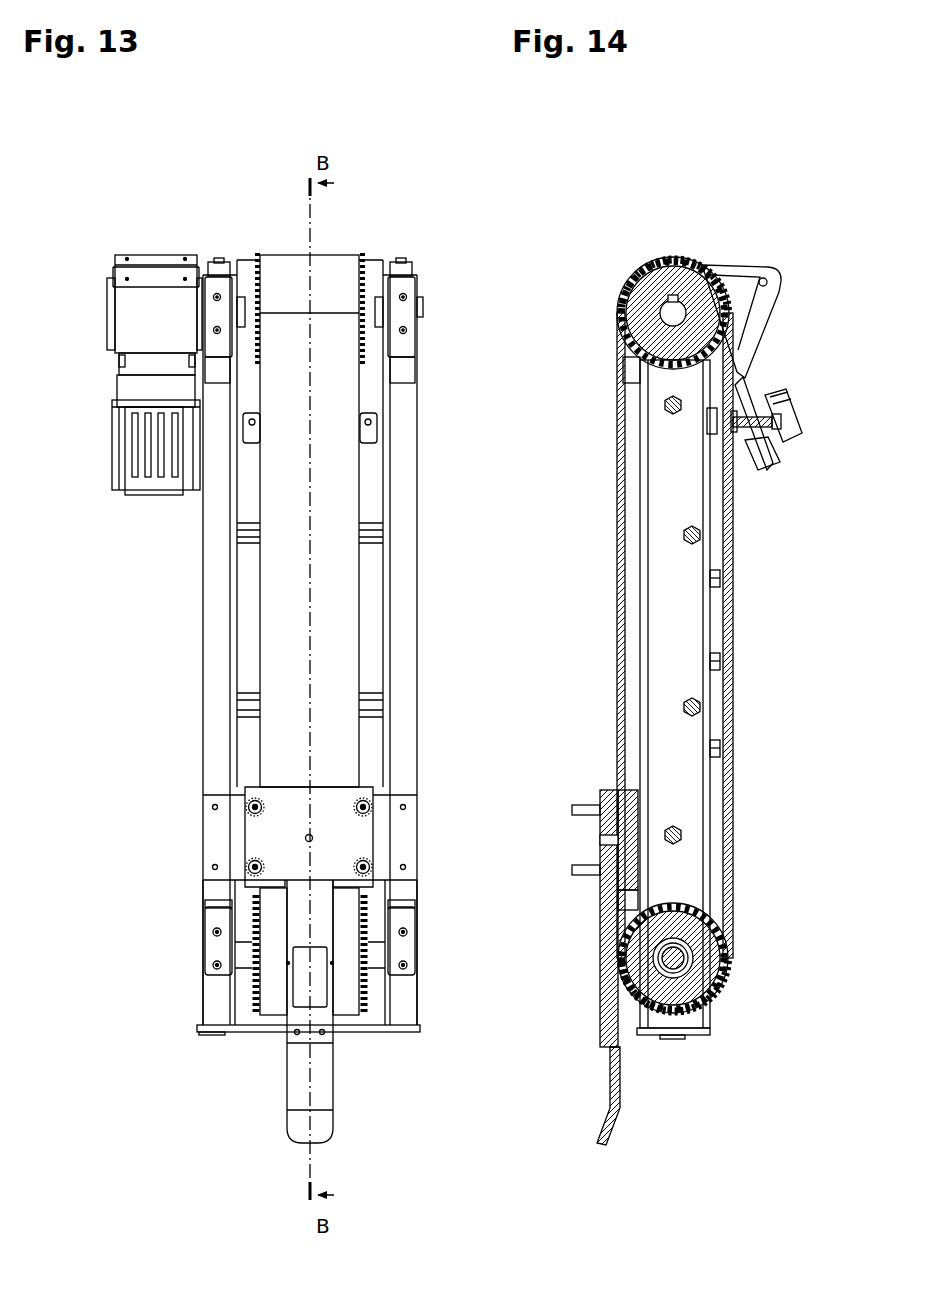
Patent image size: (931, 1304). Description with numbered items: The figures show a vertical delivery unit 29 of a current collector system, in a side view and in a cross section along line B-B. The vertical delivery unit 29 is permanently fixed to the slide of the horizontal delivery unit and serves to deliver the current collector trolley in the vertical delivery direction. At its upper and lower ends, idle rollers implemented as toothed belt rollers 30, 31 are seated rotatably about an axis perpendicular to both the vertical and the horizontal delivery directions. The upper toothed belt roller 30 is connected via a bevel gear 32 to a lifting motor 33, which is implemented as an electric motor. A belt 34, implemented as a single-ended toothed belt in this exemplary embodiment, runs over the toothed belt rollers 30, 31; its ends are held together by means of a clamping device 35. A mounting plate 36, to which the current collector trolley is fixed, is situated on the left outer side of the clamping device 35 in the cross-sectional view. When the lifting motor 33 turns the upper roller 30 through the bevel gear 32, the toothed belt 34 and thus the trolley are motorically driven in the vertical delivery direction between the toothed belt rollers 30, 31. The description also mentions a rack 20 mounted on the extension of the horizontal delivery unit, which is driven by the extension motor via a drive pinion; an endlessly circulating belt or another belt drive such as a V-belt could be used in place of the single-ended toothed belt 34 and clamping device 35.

In FIG. 13, the rack 20 is at (245, 838).
In FIG. 14, the vertical delivery unit 29 is at (553, 160).
In FIG. 13, the upper toothed belt roller 30 is at (365, 255).
In FIG. 14, the upper toothed belt roller 30 is at (633, 273).
In FIG. 13, the lower toothed belt roller 31 is at (366, 1005).
In FIG. 14, the lower toothed belt roller 31 is at (705, 990).
In FIG. 13, the bevel gear 32 is at (105, 314).
In FIG. 14, the bevel gear 32 is at (745, 362).
In FIG. 13, the lifting motor 33 is at (110, 447).
In FIG. 14, the lifting motor 33 is at (770, 455).
In FIG. 13, the toothed belt 34 is at (347, 603).
In FIG. 14, the toothed belt 34 is at (613, 605).
In FIG. 14, the clamping device 35 is at (610, 782).
In FIG. 14, the mounting plate 36 is at (597, 912).